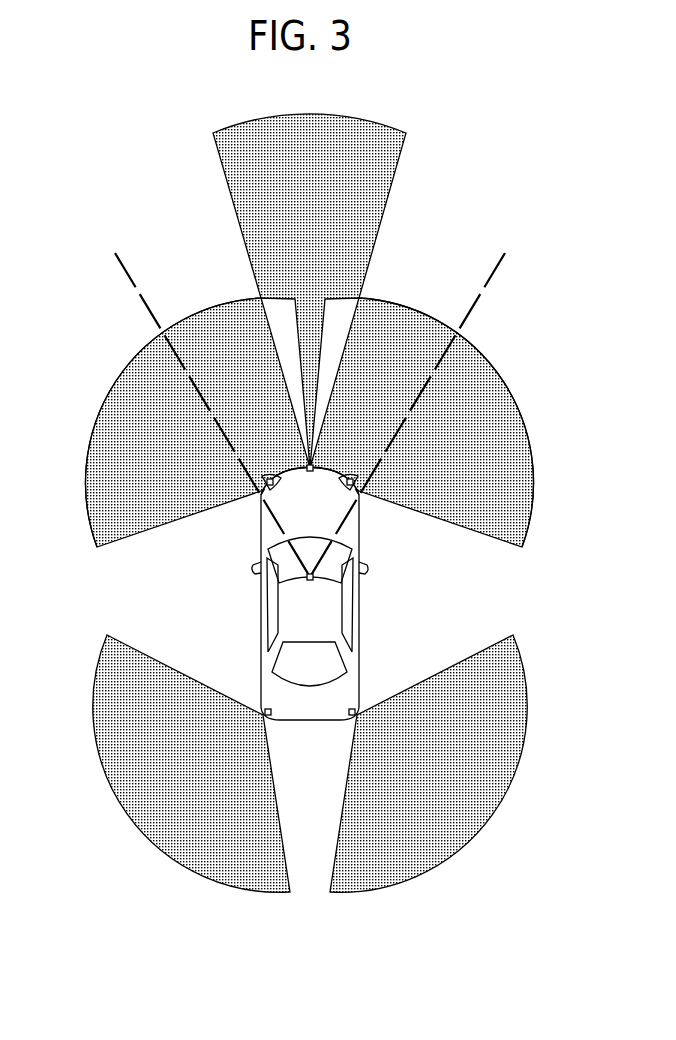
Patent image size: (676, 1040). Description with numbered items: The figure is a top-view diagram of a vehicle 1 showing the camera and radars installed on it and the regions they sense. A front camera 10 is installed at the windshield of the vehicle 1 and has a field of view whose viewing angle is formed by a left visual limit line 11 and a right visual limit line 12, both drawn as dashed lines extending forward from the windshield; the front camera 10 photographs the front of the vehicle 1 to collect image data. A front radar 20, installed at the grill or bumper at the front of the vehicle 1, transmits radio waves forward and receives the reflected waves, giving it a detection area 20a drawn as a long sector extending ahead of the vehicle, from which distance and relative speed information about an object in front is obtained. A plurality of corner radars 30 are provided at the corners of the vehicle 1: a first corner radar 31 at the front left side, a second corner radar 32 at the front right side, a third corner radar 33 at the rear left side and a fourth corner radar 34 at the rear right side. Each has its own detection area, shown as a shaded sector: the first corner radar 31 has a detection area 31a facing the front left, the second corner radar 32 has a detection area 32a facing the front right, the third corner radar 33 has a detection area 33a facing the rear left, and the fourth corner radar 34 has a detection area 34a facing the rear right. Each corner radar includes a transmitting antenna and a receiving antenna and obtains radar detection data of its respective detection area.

The vehicle 1 is at (293, 607).
The front camera 10 is at (322, 578).
The left visual limit line 11 is at (127, 282).
The right visual limit line 12 is at (493, 282).
The front radar 20 is at (312, 466).
The detection area 20a is at (383, 168).
The corner radars 30 is at (312, 597).
The first corner radar 31 is at (258, 496).
The second corner radar 32 is at (362, 496).
The third corner radar 33 is at (263, 712).
The fourth corner radar 34 is at (357, 712).
The detection area 31a is at (118, 407).
The detection area 32a is at (502, 407).
The detection area 33a is at (115, 760).
The detection area 34a is at (505, 760).